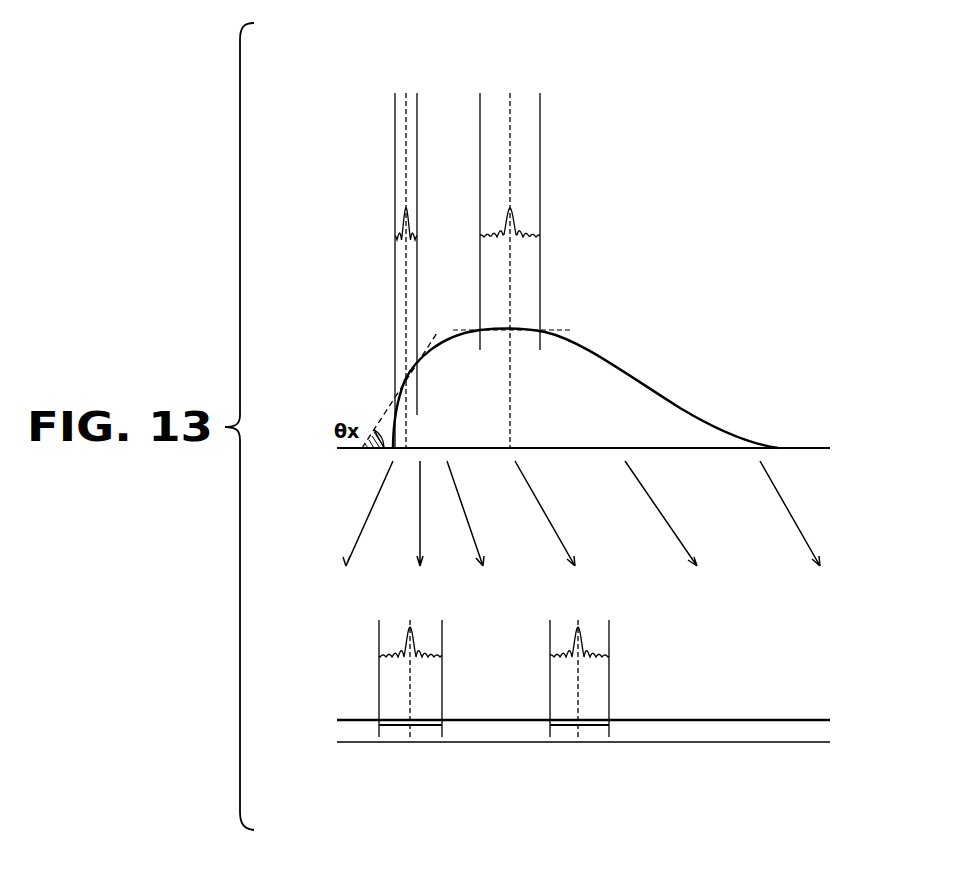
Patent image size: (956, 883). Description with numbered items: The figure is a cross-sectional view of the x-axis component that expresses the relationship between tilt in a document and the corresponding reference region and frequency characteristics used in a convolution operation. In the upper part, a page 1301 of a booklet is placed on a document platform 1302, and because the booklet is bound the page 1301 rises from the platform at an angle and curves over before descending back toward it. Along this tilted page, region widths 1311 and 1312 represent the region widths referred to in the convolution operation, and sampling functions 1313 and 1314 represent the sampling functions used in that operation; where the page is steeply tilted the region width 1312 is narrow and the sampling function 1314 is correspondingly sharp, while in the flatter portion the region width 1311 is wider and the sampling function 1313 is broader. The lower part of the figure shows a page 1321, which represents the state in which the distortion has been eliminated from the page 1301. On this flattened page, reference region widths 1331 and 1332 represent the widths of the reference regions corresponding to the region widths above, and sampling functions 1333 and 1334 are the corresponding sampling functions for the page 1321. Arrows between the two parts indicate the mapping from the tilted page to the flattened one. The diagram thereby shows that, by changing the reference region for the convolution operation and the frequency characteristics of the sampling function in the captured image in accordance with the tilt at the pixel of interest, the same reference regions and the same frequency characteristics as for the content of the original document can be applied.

The page 1301 is at (667, 370).
The document platform 1302 is at (801, 446).
The region width 1311 is at (540, 115).
The region width 1312 is at (417, 100).
The sampling function 1313 is at (578, 223).
The sampling function 1314 is at (395, 236).
The page 1321 is at (741, 718).
The reference region width 1331 is at (594, 727).
The reference region width 1332 is at (425, 727).
The sampling function 1333 is at (589, 650).
The sampling function 1334 is at (420, 650).